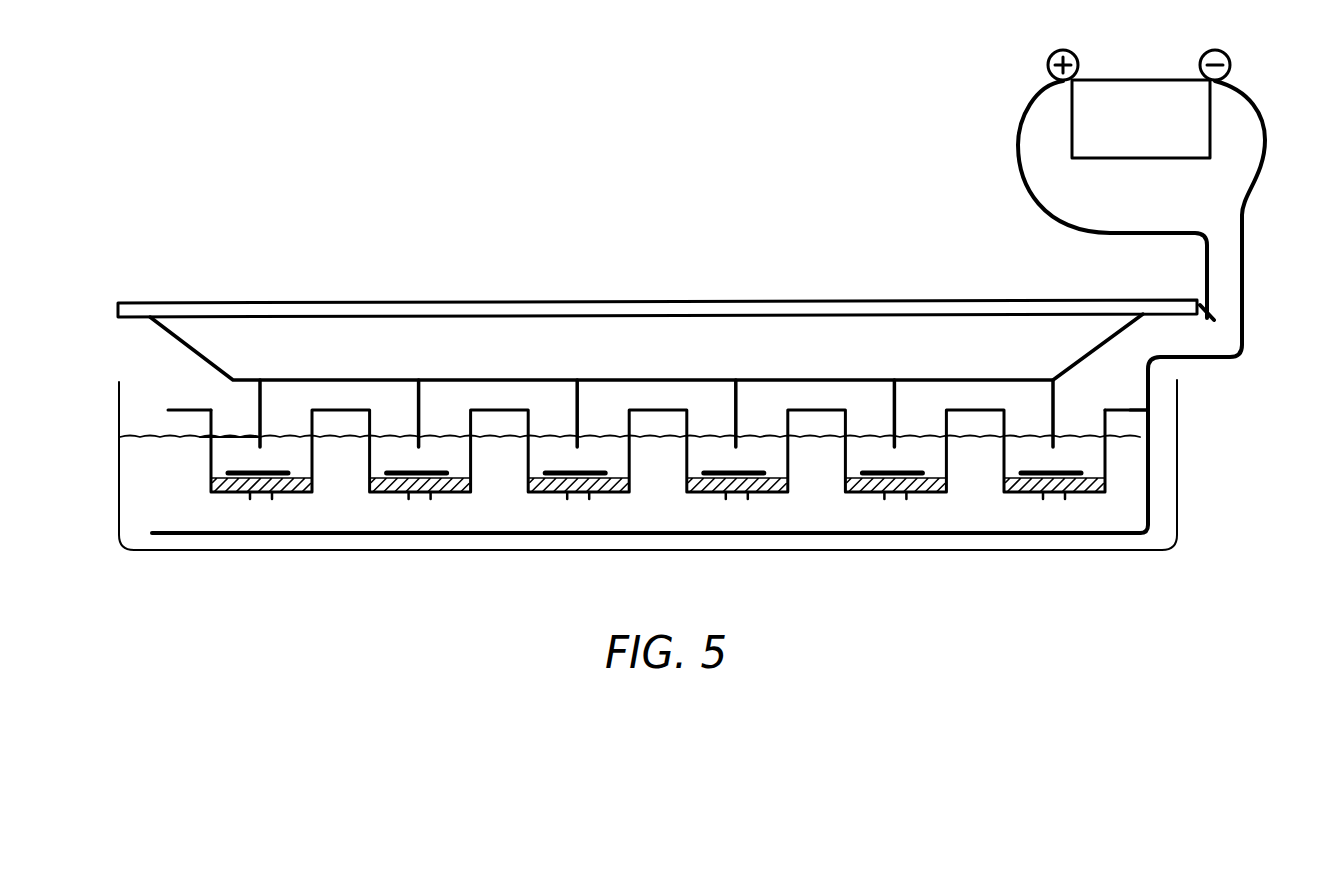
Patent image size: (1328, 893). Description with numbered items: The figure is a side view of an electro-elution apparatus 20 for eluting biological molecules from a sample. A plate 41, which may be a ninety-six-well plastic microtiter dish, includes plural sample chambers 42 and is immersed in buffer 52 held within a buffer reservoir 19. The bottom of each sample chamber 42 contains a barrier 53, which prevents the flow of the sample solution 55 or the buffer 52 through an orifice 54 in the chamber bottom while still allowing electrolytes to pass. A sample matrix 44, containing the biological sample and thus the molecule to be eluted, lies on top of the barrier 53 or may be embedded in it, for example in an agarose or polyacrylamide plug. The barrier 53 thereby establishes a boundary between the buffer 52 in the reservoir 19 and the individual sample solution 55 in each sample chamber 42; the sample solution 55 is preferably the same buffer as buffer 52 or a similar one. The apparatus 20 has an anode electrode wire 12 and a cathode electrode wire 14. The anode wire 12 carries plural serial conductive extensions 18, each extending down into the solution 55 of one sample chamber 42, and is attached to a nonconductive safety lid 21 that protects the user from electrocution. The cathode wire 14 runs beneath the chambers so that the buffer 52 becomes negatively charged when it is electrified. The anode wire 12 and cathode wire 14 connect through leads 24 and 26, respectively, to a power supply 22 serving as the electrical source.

The anode electrode wire 12 is at (207, 360).
The cathode electrode wire 14 is at (222, 535).
The serial conductive extensions 18 is at (262, 402).
The buffer reservoir 19 is at (1177, 538).
The electro-elution apparatus 20 is at (339, 216).
The safety lid 21 is at (855, 318).
The power supply 22 is at (1113, 78).
The lead 24 is at (1026, 184).
The lead 26 is at (1245, 220).
The plate 41 is at (1127, 410).
The sample chambers 42 is at (313, 460).
The sample matrix 44 is at (242, 470).
The buffer 52 is at (155, 437).
The barrier 53 is at (215, 485).
The orifice 54 is at (260, 497).
The sample solution 55 is at (237, 437).